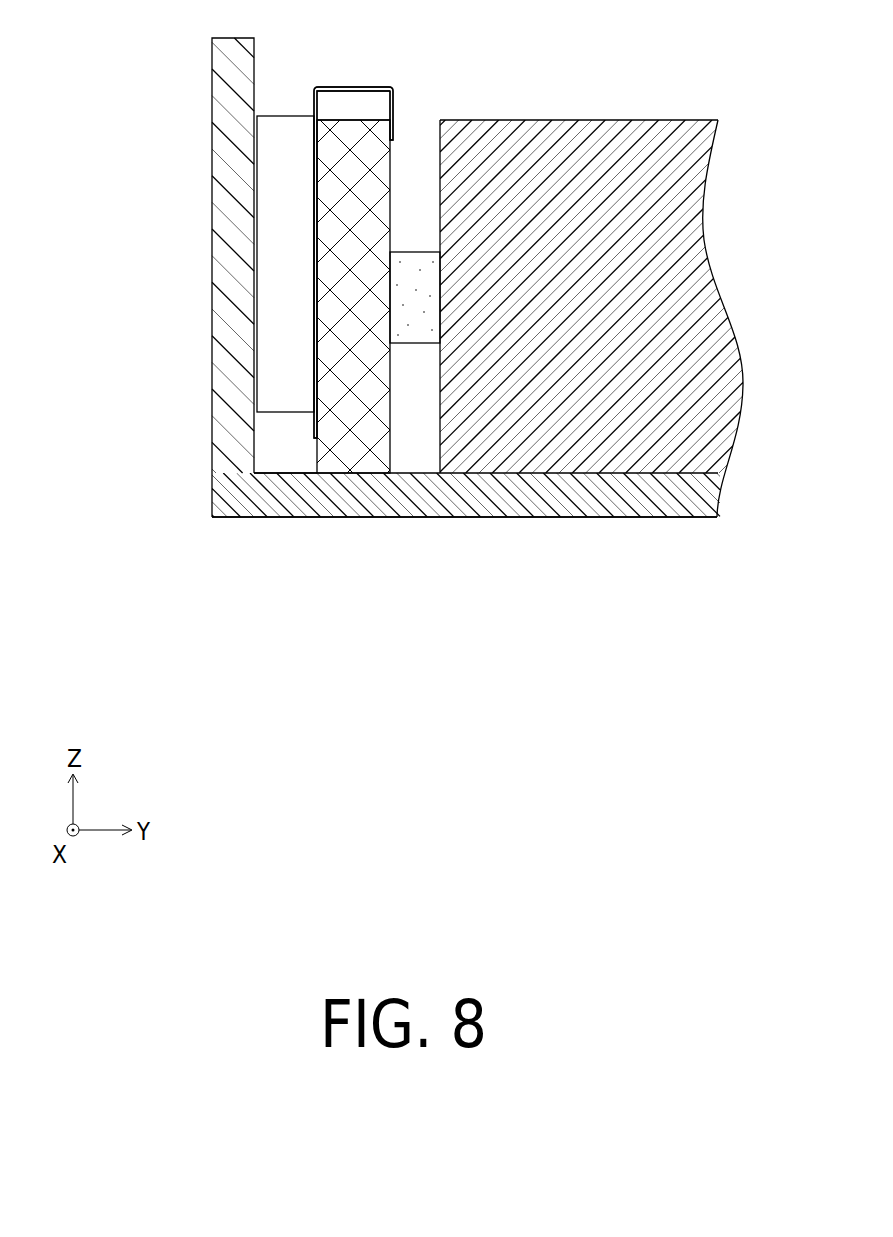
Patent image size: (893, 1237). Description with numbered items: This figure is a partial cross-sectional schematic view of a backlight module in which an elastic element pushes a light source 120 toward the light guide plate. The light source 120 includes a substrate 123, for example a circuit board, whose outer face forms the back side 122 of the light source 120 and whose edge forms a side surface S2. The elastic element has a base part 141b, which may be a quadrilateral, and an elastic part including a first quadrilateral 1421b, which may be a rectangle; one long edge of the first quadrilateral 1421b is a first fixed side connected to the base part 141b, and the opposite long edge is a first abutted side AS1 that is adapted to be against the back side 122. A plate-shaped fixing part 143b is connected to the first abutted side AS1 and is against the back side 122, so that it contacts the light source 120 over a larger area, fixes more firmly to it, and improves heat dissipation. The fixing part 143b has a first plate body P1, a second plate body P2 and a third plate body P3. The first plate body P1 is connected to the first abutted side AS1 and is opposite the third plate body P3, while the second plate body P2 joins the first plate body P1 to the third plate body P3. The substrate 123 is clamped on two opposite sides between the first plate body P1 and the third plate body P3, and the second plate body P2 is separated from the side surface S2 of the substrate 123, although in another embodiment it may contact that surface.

The base part 141b is at (255, 328).
The first quadrilateral 1421b is at (281, 381).
The first abutted side AS1 is at (313, 247).
The back side 122 is at (313, 453).
The substrate 123 is at (356, 440).
The light source 120 is at (531, 349).
The fixing part 143b is at (241, 617).
The first plate body P1 is at (313, 422).
The second plate body P2 is at (328, 87).
The third plate body P3 is at (395, 110).
The side surface S2 is at (362, 108).